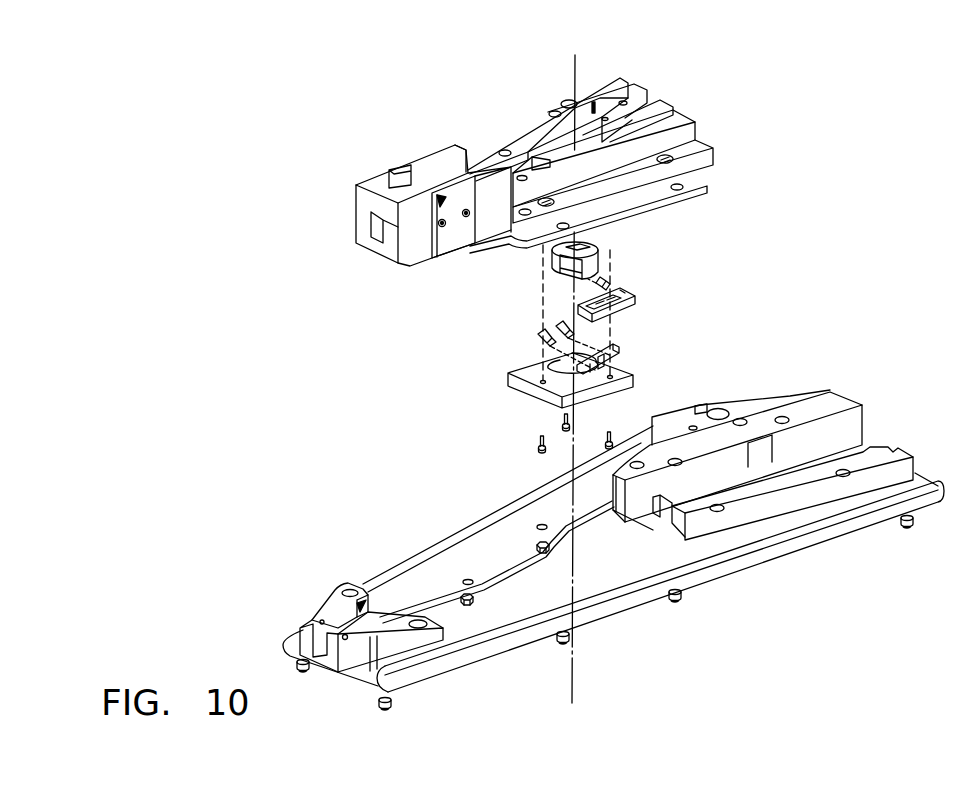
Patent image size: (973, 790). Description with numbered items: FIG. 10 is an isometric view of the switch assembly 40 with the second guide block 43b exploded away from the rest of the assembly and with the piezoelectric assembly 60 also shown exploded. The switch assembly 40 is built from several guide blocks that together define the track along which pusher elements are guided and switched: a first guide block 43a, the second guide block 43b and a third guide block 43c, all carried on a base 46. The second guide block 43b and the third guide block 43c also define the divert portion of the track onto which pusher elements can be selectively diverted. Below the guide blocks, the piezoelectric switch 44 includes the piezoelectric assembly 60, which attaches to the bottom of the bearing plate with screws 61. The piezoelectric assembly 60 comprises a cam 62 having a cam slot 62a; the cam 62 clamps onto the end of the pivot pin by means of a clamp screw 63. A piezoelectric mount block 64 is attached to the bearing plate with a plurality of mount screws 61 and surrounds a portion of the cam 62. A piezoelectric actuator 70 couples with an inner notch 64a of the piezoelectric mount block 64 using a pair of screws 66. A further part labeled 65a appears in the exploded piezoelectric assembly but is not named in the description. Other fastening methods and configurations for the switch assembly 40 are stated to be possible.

The switch assembly 40 is at (287, 145).
The piezoelectric switch 44 is at (601, 50).
The first guide block 43a is at (337, 607).
The second guide block 43b is at (700, 134).
The third guide block 43c is at (832, 408).
The base 46 is at (612, 600).
The piezoelectric assembly 60 is at (715, 230).
The mount screws 61 is at (542, 440).
The cam 62 is at (597, 271).
The cam slot 62a is at (578, 250).
The clamp screw 63 is at (607, 283).
The piezoelectric mount block 64 is at (507, 372).
The inner notch 64a is at (641, 355).
The adapter plate 65a is at (599, 321).
The screws 66 is at (559, 329).
The piezoelectric actuator 70 is at (651, 313).